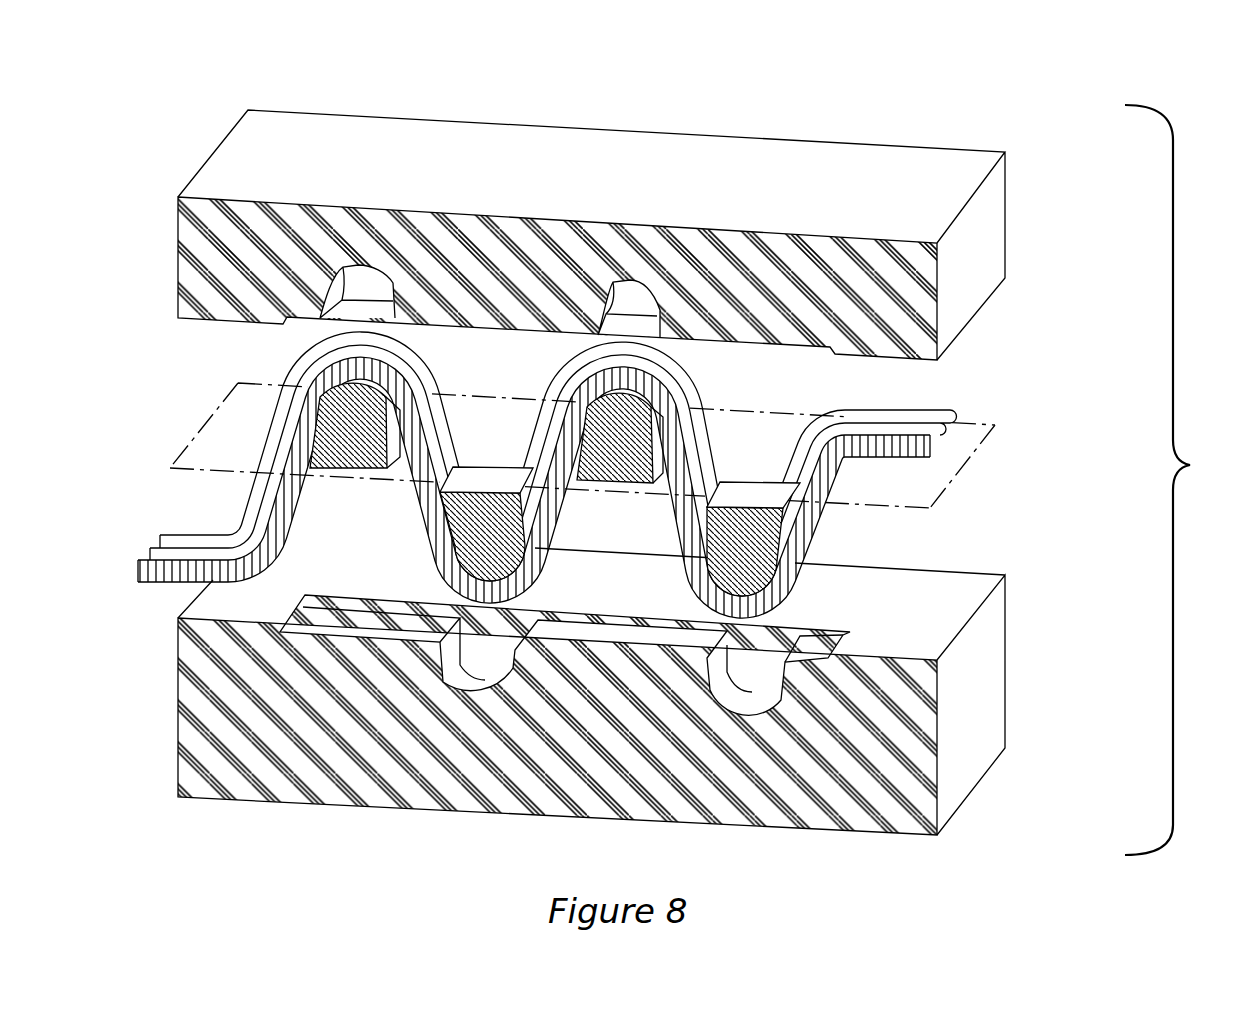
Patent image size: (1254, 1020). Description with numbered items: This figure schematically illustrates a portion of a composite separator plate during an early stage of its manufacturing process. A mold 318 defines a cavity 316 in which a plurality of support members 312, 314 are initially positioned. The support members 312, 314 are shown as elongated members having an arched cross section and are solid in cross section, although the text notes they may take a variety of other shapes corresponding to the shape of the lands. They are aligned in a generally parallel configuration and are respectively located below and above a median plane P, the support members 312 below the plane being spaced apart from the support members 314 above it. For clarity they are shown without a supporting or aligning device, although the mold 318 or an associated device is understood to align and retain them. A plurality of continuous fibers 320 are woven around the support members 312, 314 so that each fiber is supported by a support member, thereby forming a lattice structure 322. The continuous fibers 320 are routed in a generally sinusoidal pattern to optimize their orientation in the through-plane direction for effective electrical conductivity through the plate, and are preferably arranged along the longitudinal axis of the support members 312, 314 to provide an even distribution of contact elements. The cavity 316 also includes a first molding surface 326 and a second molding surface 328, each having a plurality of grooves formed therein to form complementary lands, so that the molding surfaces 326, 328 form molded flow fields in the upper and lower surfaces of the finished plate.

The support members 312 is at (470, 467).
The support members 314 is at (325, 470).
The cavity 316 is at (626, 475).
The mold 318 is at (1185, 480).
The continuous fibers 320 is at (950, 423).
The lattice structure 322 is at (243, 484).
The first molding surface 326 is at (360, 267).
The second molding surface 328 is at (474, 698).
The median plane P is at (893, 505).